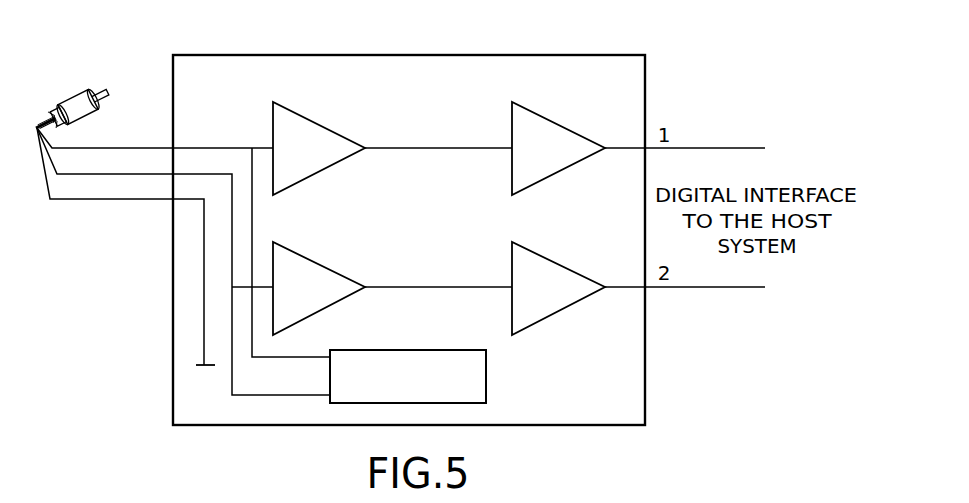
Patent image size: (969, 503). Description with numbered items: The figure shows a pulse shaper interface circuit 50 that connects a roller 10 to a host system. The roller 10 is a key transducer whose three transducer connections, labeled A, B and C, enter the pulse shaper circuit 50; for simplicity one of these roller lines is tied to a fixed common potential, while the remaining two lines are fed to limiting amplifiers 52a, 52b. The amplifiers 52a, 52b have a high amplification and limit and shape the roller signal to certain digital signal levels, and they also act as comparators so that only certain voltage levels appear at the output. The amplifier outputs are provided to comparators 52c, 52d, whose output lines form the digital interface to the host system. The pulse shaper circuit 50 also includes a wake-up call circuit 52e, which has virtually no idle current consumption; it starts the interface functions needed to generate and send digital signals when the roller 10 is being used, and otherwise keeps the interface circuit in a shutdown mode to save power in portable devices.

The roller 10 is at (80, 97).
The pulse shaper circuit 50 is at (172, 76).
The amplifier 52a is at (327, 172).
The amplifier 52b is at (327, 311).
The comparator 52c is at (547, 180).
The comparator 52d is at (547, 319).
The wake-up call circuit 52e is at (486, 376).